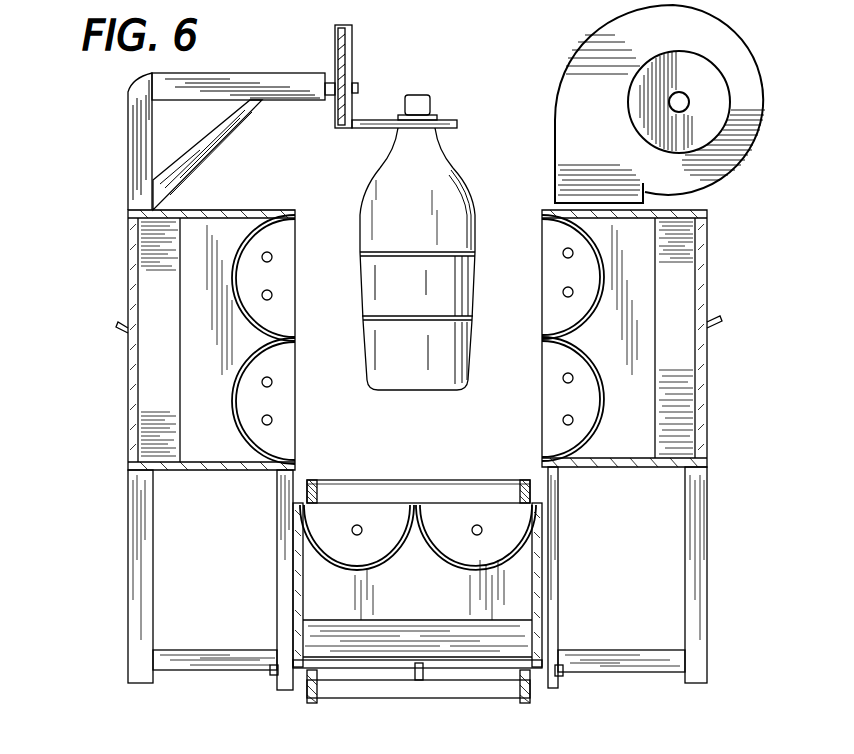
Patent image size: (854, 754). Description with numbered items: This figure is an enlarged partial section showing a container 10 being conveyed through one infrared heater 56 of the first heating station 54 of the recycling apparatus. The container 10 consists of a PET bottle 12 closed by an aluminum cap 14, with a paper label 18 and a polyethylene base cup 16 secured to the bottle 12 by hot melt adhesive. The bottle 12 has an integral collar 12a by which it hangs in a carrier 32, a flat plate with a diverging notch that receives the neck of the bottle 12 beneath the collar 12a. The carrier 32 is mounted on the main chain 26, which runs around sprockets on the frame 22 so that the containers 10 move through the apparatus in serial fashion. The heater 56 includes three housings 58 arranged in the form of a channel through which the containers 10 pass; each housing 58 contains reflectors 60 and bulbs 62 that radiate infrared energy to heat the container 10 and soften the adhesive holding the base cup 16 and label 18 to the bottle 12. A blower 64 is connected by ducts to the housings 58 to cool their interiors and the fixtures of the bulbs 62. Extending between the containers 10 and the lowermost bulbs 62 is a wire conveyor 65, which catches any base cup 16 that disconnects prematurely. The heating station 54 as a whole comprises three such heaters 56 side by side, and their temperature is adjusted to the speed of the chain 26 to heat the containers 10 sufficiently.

The container 10 is at (421, 227).
The bottle 12 is at (372, 192).
The collar 12a is at (433, 117).
The cap 14 is at (413, 96).
The base cup 16 is at (366, 350).
The label 18 is at (372, 276).
The frame 22 is at (110, 163).
The chain 26 is at (352, 50).
The carrier 32 is at (372, 128).
The heating station 54 is at (450, 62).
The infrared heater 56 is at (716, 238).
The housing 58 is at (140, 282).
The reflector 60 is at (247, 364).
The bulb 62 is at (272, 296).
The blower 64 is at (584, 58).
The wire conveyor 65 is at (432, 478).